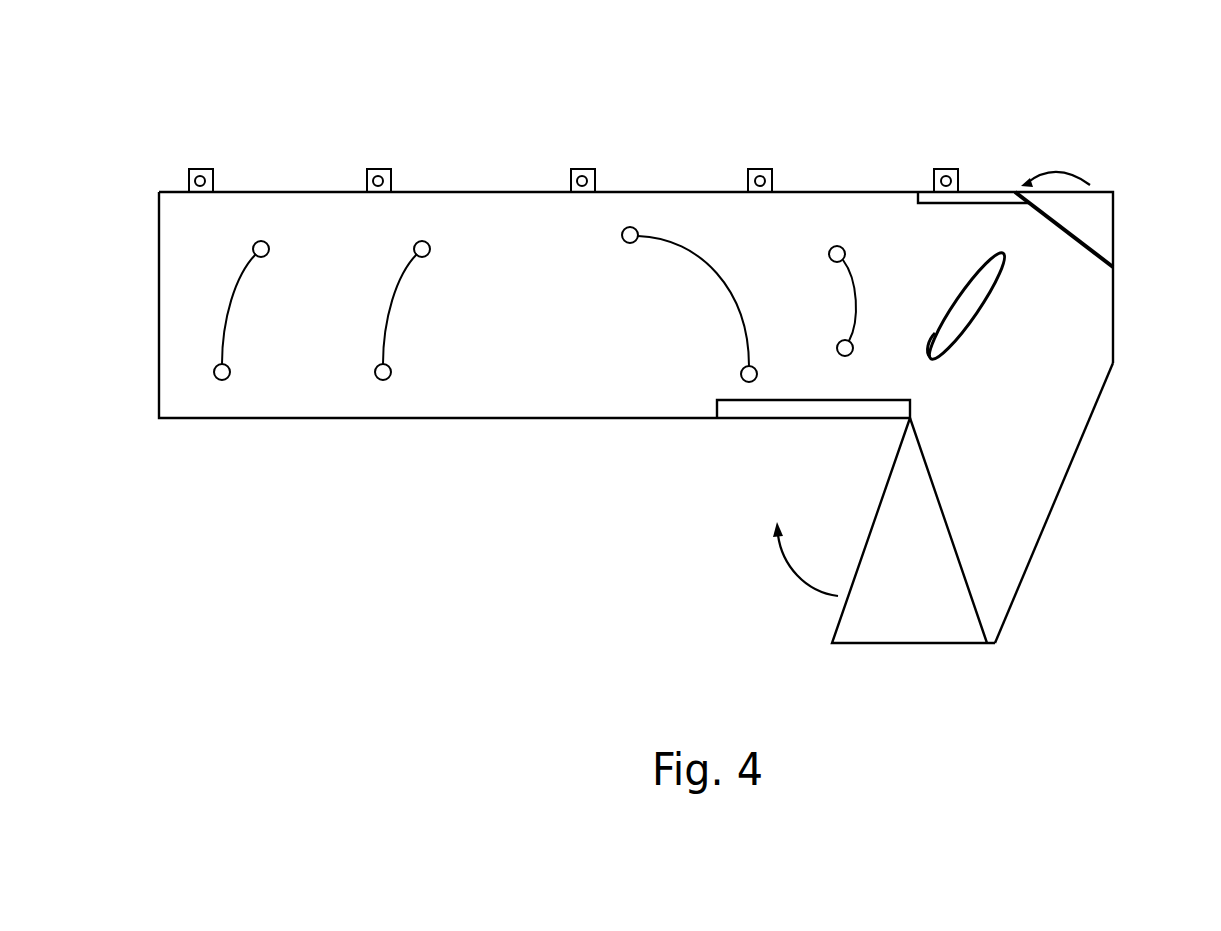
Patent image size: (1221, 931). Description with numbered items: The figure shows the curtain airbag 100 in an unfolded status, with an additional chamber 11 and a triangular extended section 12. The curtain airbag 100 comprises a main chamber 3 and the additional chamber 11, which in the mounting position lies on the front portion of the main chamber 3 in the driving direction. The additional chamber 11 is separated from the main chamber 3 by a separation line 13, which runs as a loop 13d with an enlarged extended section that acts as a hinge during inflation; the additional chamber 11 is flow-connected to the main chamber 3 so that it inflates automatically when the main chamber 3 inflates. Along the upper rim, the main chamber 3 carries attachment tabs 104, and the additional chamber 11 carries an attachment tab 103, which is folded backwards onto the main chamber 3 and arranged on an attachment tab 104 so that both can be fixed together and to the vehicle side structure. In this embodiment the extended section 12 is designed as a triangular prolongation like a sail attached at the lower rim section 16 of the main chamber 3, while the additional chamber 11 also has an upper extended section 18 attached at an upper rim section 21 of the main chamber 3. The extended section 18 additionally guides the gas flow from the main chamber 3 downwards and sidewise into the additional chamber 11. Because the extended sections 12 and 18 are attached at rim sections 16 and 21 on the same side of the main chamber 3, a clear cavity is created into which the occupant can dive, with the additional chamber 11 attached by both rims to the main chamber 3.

The curtain airbag 100 is at (496, 108).
The main chamber 3 is at (723, 233).
The attachment tab 104 is at (582, 170).
The attachment tab 103 is at (946, 170).
The upper rim section 21 is at (990, 197).
The extended section 18 is at (1095, 220).
The separation line 13 is at (988, 268).
The loop 13d is at (938, 320).
The rim section 16 is at (840, 410).
The extended section 12 is at (903, 617).
The additional chamber 11 is at (1047, 448).